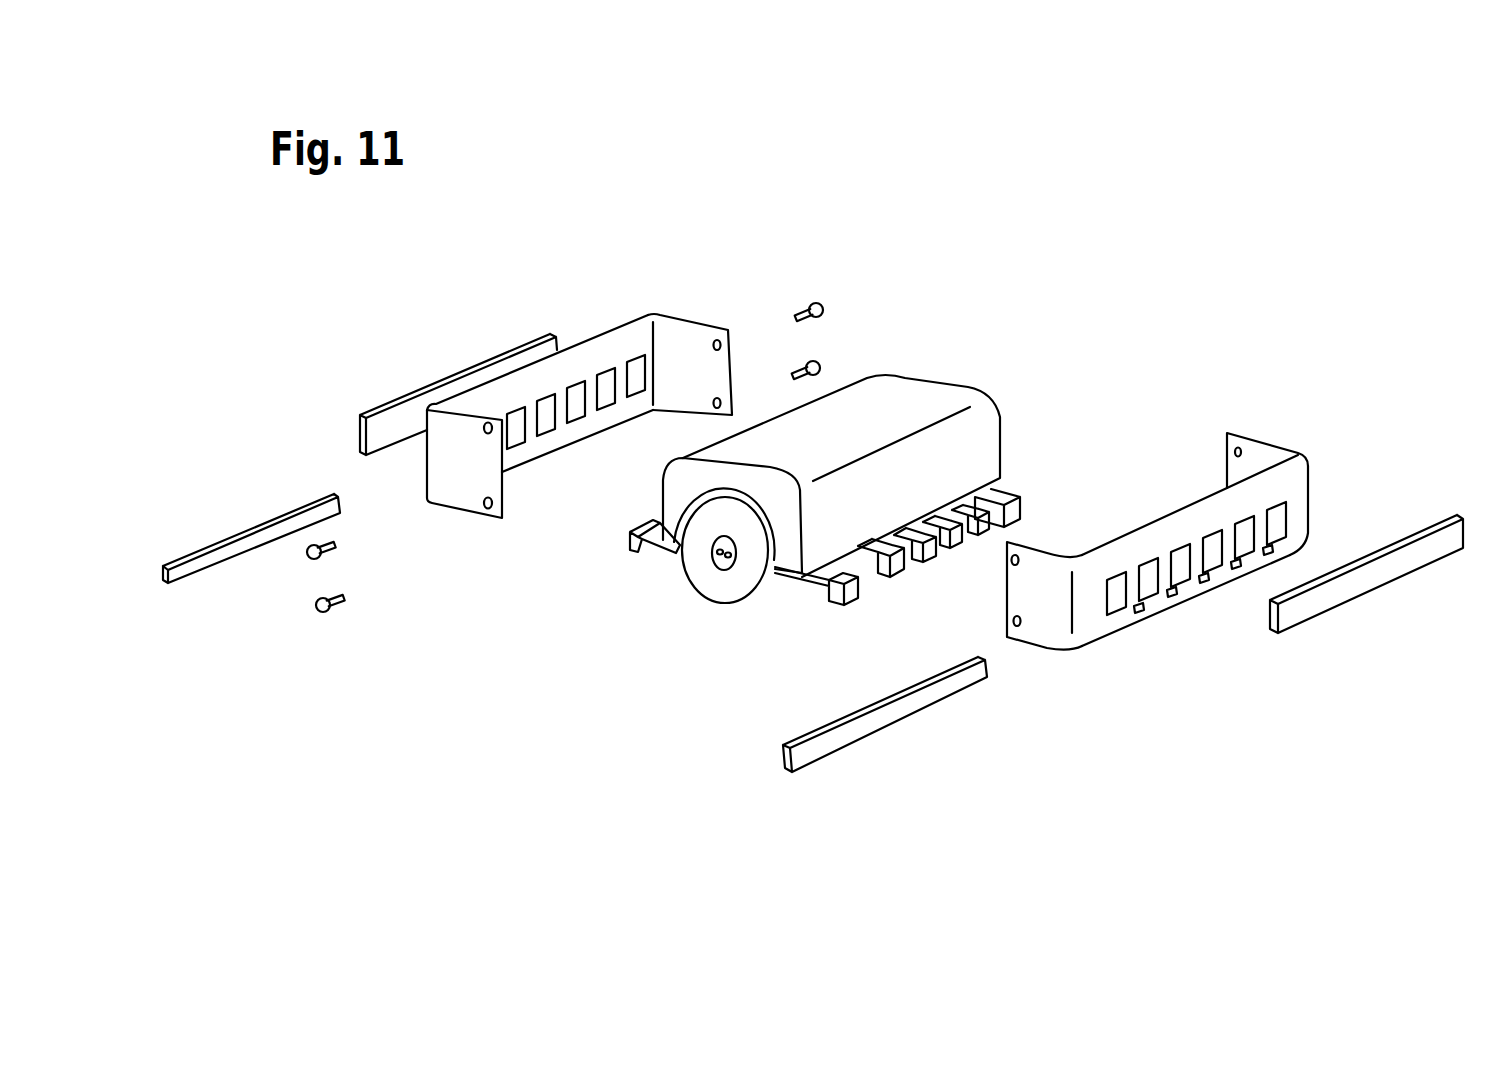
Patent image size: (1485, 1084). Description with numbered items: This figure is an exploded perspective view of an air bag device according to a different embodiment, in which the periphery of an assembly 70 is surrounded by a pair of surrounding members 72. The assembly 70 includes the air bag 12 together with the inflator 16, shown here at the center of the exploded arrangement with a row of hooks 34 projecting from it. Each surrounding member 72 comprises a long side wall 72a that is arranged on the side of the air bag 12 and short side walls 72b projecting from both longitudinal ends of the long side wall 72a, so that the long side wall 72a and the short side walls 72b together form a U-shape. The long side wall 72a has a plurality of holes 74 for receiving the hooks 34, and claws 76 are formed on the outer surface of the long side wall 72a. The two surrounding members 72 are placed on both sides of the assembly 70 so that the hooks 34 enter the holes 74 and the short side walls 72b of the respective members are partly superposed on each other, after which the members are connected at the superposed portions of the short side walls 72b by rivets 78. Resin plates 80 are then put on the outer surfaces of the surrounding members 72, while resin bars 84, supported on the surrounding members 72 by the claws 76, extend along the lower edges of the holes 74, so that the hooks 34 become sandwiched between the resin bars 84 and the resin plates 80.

The air bag 12 is at (960, 401).
The inflator 16 is at (720, 590).
The hooks 34 is at (640, 534).
The assembly 70 is at (976, 361).
The surrounding member 72 is at (914, 468).
The long side wall 72a is at (553, 452).
The short side walls 72b is at (690, 337).
The holes 74 is at (605, 398).
The claws 76 is at (1272, 547).
The rivets 78 is at (823, 306).
The resin plates 80 is at (385, 413).
The resin bars 84 is at (190, 575).